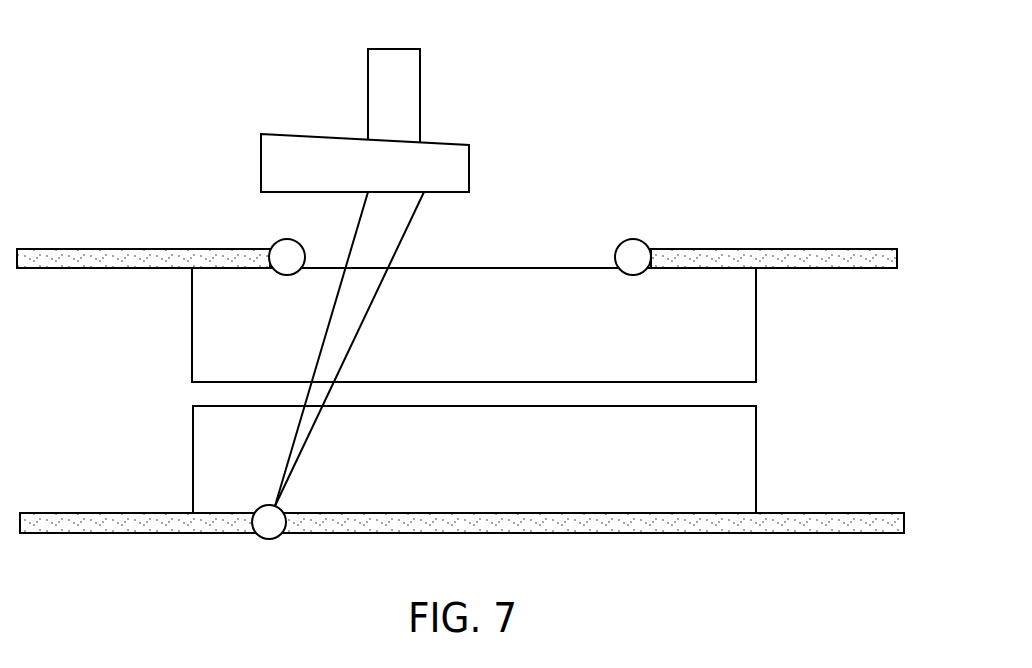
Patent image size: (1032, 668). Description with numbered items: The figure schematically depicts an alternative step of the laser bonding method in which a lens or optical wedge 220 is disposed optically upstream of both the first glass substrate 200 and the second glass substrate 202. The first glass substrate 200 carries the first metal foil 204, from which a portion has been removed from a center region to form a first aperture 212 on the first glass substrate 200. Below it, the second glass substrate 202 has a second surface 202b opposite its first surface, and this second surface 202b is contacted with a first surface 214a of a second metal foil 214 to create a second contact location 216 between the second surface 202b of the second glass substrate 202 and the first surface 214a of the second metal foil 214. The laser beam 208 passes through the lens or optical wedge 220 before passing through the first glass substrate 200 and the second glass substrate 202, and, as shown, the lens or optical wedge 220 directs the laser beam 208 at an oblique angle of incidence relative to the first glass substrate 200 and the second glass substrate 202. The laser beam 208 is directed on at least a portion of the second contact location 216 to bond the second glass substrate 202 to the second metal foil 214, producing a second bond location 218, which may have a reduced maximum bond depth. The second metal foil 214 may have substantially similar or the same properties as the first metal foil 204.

The first glass substrate 200 is at (474, 325).
The second glass substrate 202 is at (474, 459).
The second surface of the second glass substrate 202b is at (208, 513).
The first metal foil 204 is at (842, 249).
The laser beam 208 is at (415, 85).
The first aperture 212 is at (502, 268).
The second metal foil 214 is at (718, 533).
The first surface of the second metal foil 214a is at (843, 513).
The second contact location 216 is at (318, 515).
The second bond location 218 is at (272, 523).
The lens or optical wedge 220 is at (267, 163).